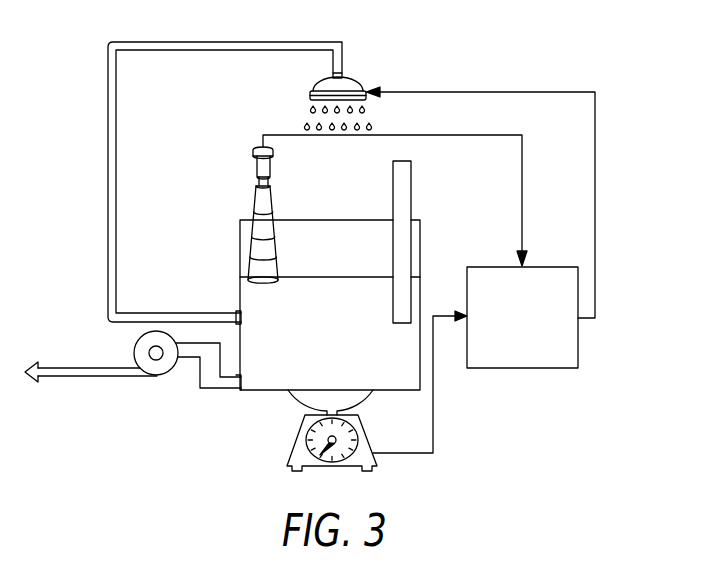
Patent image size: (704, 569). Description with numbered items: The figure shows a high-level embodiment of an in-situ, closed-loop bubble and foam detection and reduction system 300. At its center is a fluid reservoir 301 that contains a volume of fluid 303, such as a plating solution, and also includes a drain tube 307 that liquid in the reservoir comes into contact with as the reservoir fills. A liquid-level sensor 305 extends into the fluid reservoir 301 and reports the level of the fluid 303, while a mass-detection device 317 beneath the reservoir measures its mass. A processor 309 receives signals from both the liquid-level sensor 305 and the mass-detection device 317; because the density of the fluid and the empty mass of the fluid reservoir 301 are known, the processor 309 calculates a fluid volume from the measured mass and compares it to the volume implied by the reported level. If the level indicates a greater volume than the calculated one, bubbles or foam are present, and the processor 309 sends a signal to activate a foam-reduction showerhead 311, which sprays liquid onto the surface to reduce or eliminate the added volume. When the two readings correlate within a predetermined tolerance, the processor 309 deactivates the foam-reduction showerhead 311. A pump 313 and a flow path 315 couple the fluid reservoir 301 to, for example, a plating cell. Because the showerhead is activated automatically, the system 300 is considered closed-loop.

The bubble and foam detection and reduction system 300 is at (588, 50).
The fluid reservoir 301 is at (240, 236).
The fluid 303 is at (240, 300).
The liquid-level sensor 305 is at (256, 163).
The drain tube 307 is at (411, 172).
The processor 309 is at (545, 267).
The foam-reduction showerhead 311 is at (346, 83).
The pump 313 is at (136, 352).
The flow path 315 is at (40, 388).
The mass-detection device 317 is at (299, 440).